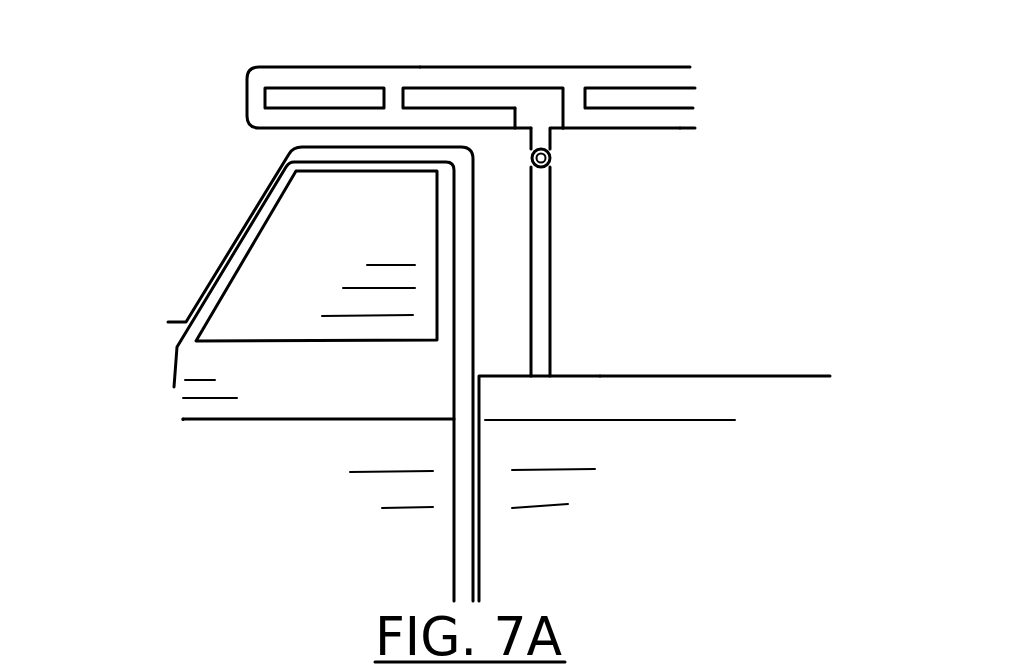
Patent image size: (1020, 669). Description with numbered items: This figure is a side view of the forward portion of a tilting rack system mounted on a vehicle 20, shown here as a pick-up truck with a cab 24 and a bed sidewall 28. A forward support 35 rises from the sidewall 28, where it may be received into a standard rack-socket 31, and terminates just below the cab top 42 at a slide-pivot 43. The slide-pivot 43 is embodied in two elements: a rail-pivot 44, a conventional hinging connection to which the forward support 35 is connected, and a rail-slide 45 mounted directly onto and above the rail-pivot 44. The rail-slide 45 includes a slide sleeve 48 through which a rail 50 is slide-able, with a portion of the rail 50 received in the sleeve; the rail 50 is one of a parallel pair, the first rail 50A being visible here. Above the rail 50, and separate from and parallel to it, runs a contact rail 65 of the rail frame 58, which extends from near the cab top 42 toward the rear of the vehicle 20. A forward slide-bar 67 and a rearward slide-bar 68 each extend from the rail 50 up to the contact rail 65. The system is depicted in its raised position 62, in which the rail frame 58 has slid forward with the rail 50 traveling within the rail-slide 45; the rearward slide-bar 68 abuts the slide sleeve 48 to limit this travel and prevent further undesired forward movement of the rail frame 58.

The vehicle 20 is at (162, 483).
The cab 24 is at (280, 490).
The sidewall 28 is at (673, 390).
The rack-socket 31 is at (553, 375).
The forward support 35 is at (530, 302).
The cab top 42 is at (305, 153).
The slide-pivot 43 is at (583, 167).
The rail-pivot 44 is at (552, 163).
The rail-slide 45 is at (533, 118).
The slide sleeve 48 is at (530, 143).
The rail 50 is at (603, 118).
The first rail 50A is at (687, 128).
The rail frame 58 is at (238, 80).
The raised position 62 is at (705, 73).
The contact rail 65 is at (447, 77).
The forward slide-bar 67 is at (392, 97).
The rearward slide-bar 68 is at (575, 88).